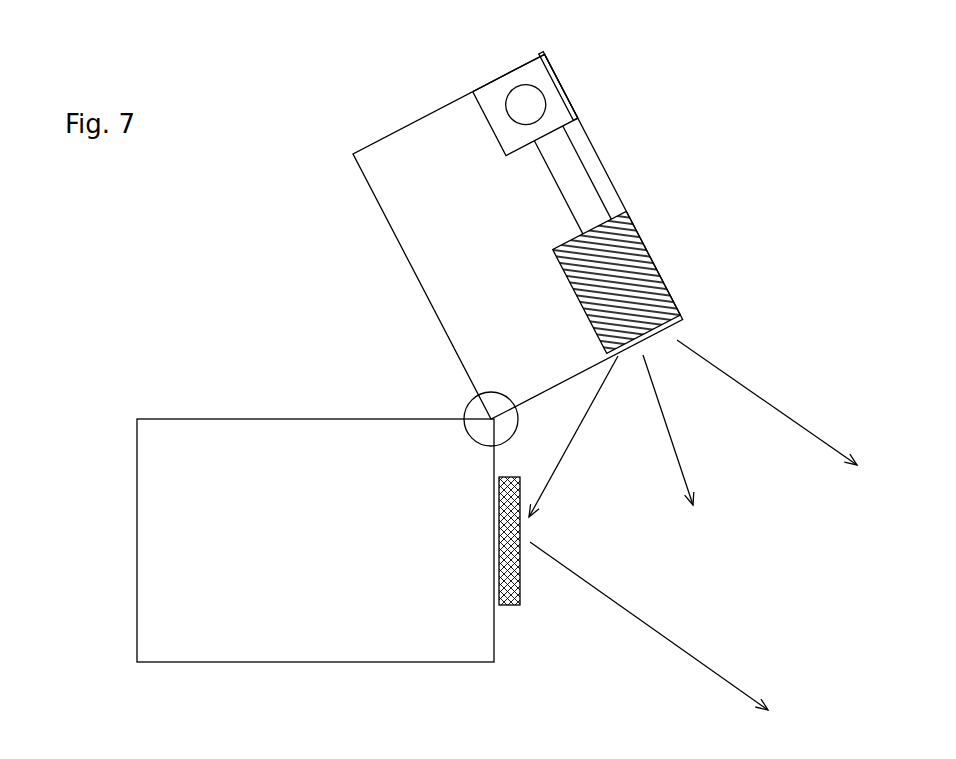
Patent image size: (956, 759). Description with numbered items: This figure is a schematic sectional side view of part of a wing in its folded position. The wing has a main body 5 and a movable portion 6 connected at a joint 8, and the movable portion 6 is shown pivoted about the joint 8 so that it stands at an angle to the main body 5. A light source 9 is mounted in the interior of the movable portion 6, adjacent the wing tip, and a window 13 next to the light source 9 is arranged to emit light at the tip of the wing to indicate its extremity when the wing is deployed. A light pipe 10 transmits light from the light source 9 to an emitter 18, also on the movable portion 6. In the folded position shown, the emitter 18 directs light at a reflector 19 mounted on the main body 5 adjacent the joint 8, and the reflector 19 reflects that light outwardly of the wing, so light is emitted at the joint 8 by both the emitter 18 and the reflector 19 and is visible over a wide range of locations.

The main body 5 is at (178, 420).
The movable portion 6 is at (378, 140).
The joint 8 is at (488, 417).
The light source 9 is at (552, 96).
The light pipe 10 is at (587, 187).
The window 13 is at (542, 55).
The emitter 18 is at (647, 272).
The reflector 19 is at (520, 587).